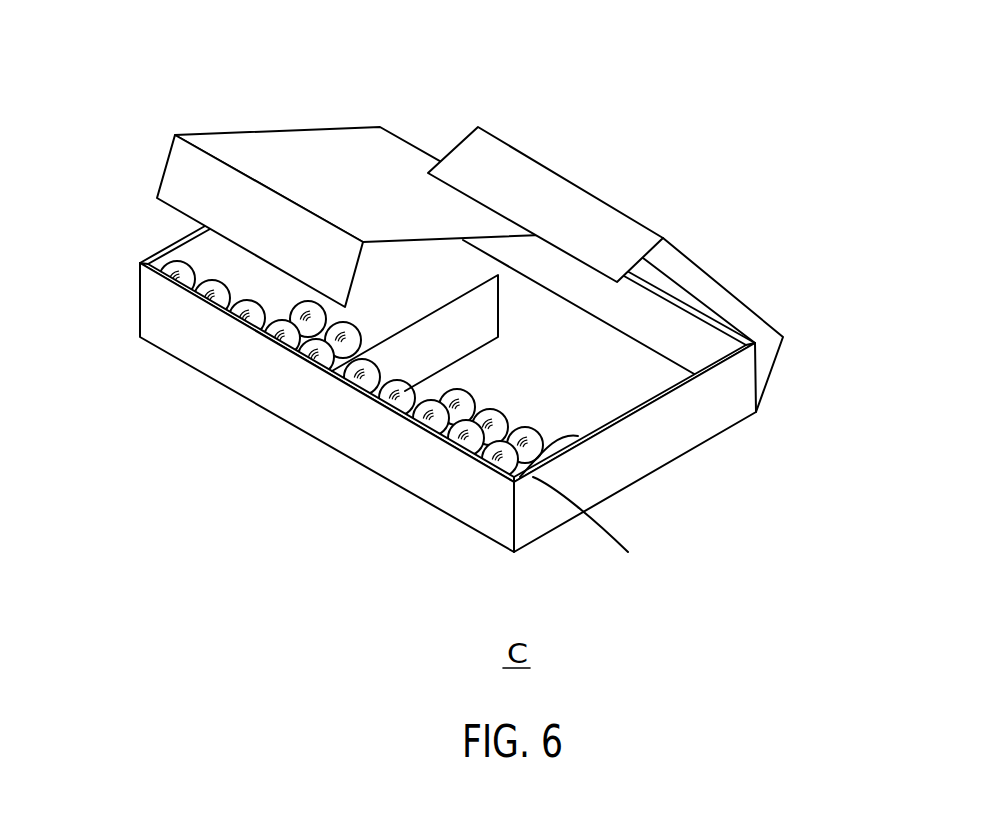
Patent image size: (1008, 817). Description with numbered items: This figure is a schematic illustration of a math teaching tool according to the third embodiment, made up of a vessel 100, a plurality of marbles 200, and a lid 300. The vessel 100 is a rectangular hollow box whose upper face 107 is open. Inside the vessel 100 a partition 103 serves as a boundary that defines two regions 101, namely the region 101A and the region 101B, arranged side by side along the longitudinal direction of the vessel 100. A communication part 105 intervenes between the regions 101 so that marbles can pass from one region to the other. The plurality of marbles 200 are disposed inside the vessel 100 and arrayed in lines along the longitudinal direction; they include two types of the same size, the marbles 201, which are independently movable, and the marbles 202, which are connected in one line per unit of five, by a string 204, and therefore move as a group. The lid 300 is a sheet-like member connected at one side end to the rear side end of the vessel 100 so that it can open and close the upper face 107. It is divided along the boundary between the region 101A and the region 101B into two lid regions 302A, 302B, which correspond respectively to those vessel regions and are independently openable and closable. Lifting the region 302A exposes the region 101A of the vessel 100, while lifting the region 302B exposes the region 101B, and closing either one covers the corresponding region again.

The vessel 100 is at (692, 430).
The region 101 is at (273, 293).
The region 101A is at (427, 261).
The region 101B is at (542, 392).
The partition 103 is at (430, 355).
The communication part 105 is at (518, 311).
The upper face 107 is at (146, 264).
The plurality of marbles 200 is at (352, 315).
The marble 201 is at (578, 436).
The marble 202 is at (440, 427).
The string 204 is at (603, 542).
The lid 300 is at (777, 357).
The region 302A is at (286, 131).
The region 302B is at (697, 262).